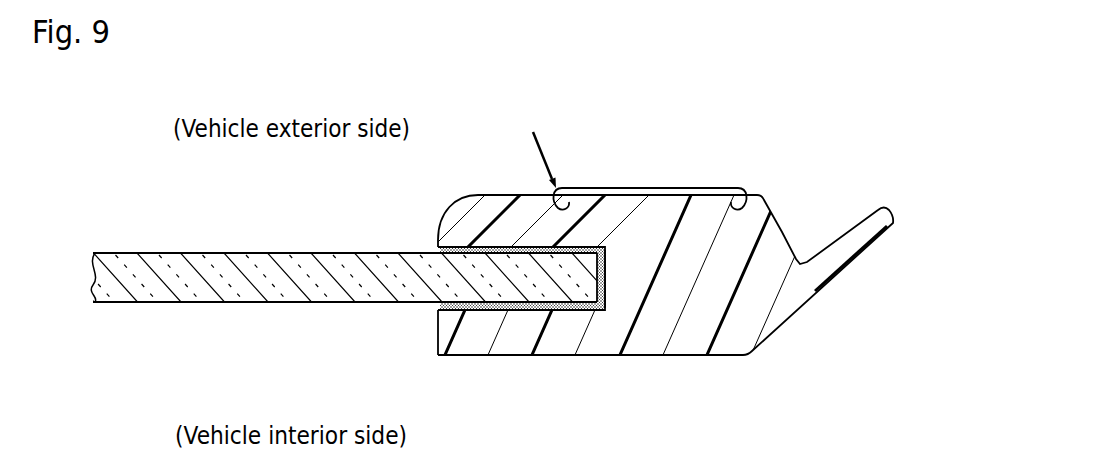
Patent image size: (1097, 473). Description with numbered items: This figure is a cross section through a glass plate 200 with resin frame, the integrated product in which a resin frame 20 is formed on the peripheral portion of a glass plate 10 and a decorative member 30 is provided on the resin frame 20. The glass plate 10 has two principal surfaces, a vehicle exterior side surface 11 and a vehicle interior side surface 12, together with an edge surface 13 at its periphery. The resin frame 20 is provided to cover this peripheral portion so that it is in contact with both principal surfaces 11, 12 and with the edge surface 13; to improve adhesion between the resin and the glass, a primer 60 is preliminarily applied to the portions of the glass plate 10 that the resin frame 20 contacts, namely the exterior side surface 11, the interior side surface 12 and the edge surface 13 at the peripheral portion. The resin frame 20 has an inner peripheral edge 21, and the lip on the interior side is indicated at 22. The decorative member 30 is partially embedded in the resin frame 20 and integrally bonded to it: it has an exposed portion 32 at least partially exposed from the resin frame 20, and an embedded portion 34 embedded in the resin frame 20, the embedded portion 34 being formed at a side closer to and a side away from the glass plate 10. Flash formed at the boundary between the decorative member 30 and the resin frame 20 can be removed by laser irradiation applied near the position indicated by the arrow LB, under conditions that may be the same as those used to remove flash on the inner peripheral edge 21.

The glass plate 10 is at (95, 281).
The vehicle exterior side surface 11 is at (160, 252).
The vehicle interior side surface 12 is at (160, 303).
The edge surface 13 is at (610, 290).
The resin frame 20 is at (538, 333).
The inner peripheral edge 21 is at (448, 207).
The interior side lip of molding 22 is at (436, 330).
The decorative member 30 is at (675, 188).
The exposed portion 32 is at (620, 188).
The embedded portion 34 is at (553, 196).
The primer 60 is at (478, 249).
The glass plate with resin frame 200 is at (834, 130).
The arrow LB is at (538, 147).